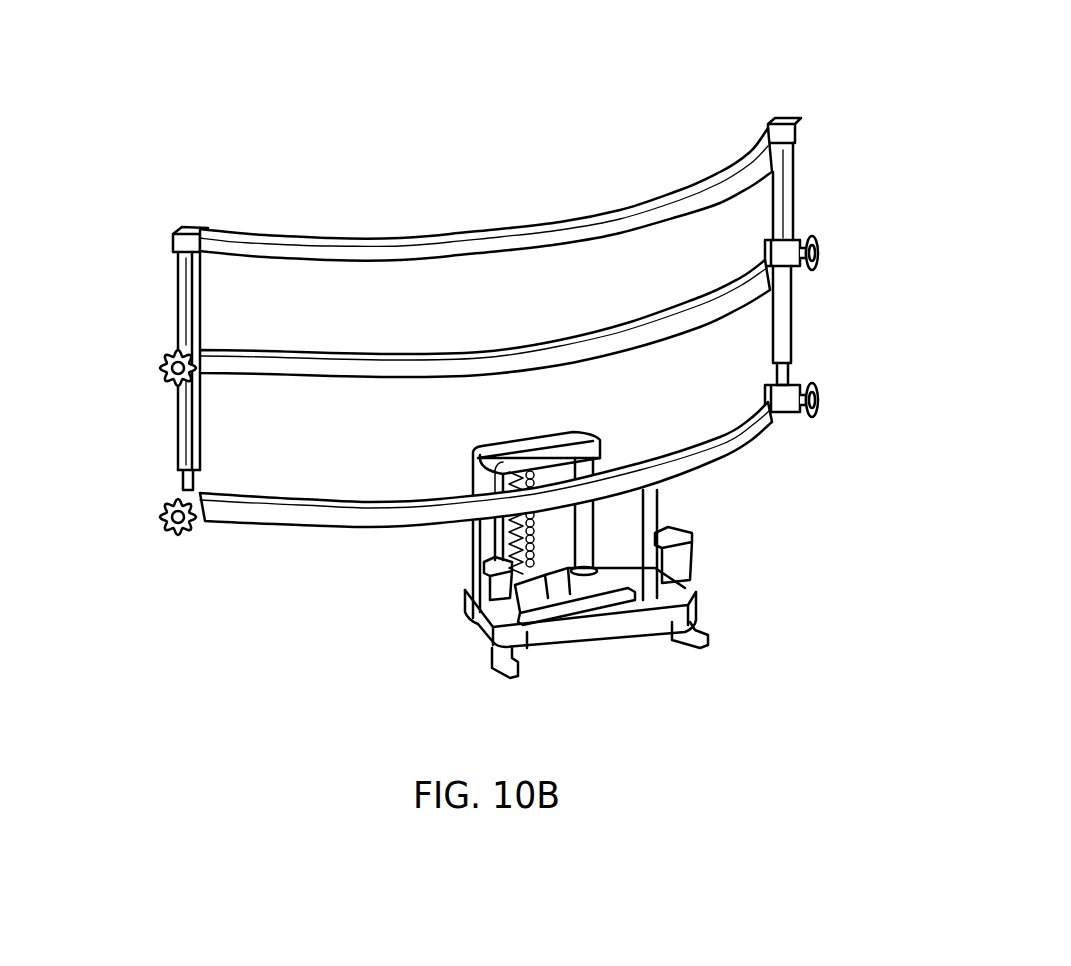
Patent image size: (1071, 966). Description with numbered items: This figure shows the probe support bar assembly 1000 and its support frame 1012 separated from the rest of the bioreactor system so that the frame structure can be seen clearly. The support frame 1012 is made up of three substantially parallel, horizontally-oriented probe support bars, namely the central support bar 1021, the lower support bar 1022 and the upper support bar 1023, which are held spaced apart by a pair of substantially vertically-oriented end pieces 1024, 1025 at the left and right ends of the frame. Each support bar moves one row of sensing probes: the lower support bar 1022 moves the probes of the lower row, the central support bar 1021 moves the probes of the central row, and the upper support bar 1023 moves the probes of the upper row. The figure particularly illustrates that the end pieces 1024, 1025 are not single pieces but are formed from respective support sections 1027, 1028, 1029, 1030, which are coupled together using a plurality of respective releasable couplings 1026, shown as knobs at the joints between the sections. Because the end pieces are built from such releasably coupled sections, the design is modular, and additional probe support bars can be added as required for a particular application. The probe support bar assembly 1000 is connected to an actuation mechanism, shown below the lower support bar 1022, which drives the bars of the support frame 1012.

The probe support bar assembly 1000 is at (420, 662).
The support frame 1012 is at (486, 274).
The central support bar 1021 is at (432, 362).
The lower support bar 1022 is at (360, 500).
The upper support bar 1023 is at (356, 246).
The end piece 1024 is at (815, 180).
The end piece 1025 is at (162, 290).
The releasable coupling 1026 is at (834, 247).
The support section 1027 is at (196, 437).
The support section 1028 is at (197, 326).
The support section 1029 is at (792, 330).
The support section 1030 is at (775, 215).